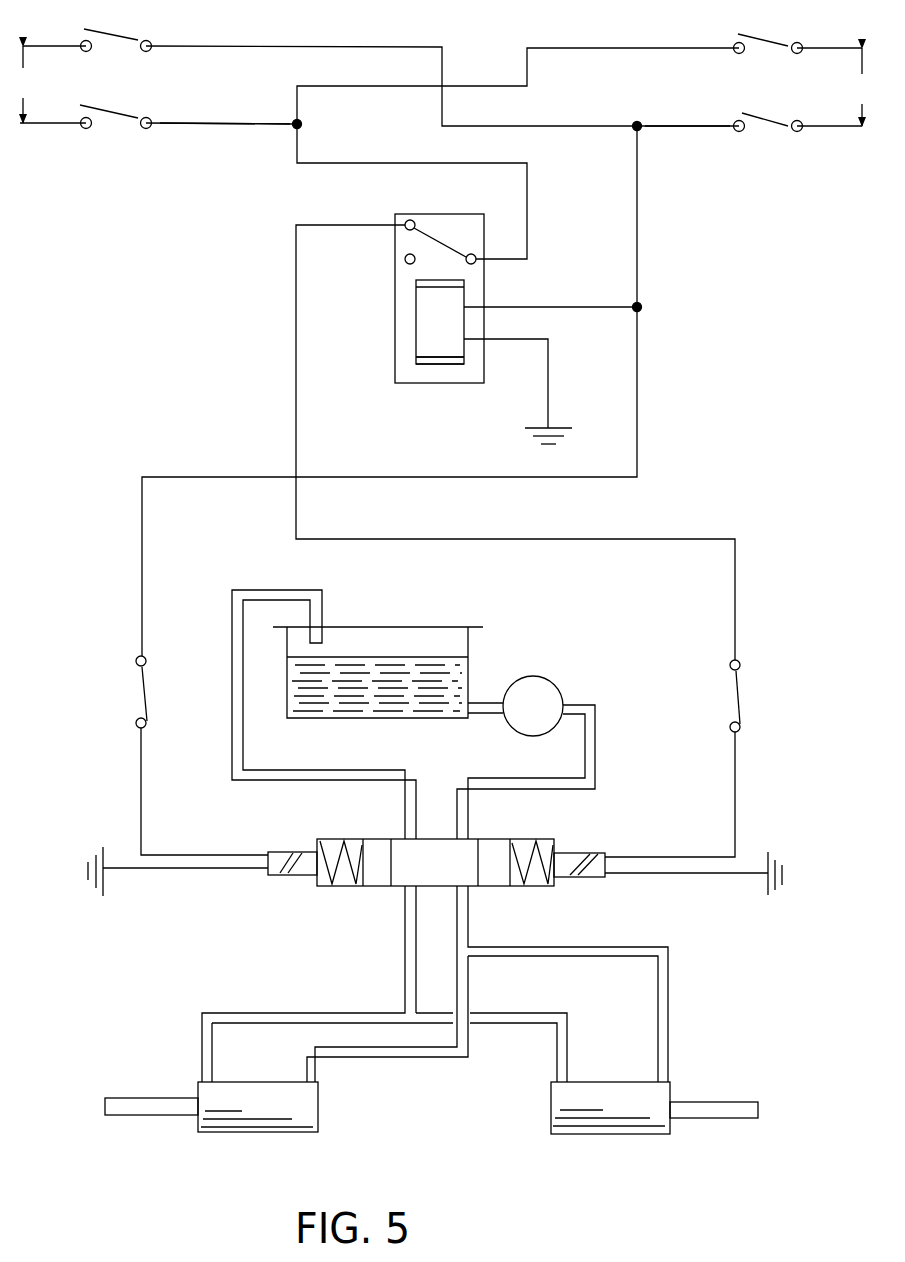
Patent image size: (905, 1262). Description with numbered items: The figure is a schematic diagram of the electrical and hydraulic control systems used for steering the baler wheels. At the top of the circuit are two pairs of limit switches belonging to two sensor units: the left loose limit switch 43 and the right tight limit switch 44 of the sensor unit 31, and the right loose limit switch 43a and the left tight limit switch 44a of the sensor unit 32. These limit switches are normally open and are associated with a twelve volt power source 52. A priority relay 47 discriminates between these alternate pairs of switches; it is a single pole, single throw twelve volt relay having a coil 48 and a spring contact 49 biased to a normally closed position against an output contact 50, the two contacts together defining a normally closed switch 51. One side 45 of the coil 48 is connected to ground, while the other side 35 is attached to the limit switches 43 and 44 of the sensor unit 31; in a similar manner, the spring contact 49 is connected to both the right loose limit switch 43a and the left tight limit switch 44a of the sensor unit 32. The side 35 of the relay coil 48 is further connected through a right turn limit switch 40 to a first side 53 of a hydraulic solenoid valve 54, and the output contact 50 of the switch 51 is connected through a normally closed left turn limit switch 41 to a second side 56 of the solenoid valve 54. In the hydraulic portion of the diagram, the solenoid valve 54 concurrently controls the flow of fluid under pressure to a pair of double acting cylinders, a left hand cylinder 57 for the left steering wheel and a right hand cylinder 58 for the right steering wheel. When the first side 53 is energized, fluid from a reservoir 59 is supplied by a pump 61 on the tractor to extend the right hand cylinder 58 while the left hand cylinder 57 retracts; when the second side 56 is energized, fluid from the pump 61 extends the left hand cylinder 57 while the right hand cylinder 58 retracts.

The sensor unit 31 is at (211, 131).
The sensor unit 32 is at (684, 134).
The side of the coil 35 is at (548, 306).
The right turn limit switch 40 is at (140, 692).
The left turn limit switch 41 is at (741, 697).
The left loose limit switch 43 is at (113, 34).
The right loose limit switch 43a is at (773, 42).
The right tight limit switch 44 is at (770, 133).
The left tight limit switch 44a is at (103, 126).
The side of the coil 45 is at (515, 339).
The priority relay 47 is at (440, 318).
The coil 48 is at (437, 363).
The spring contact 49 is at (447, 247).
The output contact 50 is at (408, 220).
The normally closed switch 51 is at (391, 236).
The power source 52 is at (438, 86).
The first side of the solenoid valve 53 is at (313, 873).
The hydraulic solenoid valve 54 is at (464, 851).
The second side of the solenoid valve 56 is at (545, 842).
The left hand cylinder 57 is at (262, 1108).
The right hand cylinder 58 is at (607, 1110).
The reservoir 59 is at (400, 645).
The pump 61 is at (536, 684).